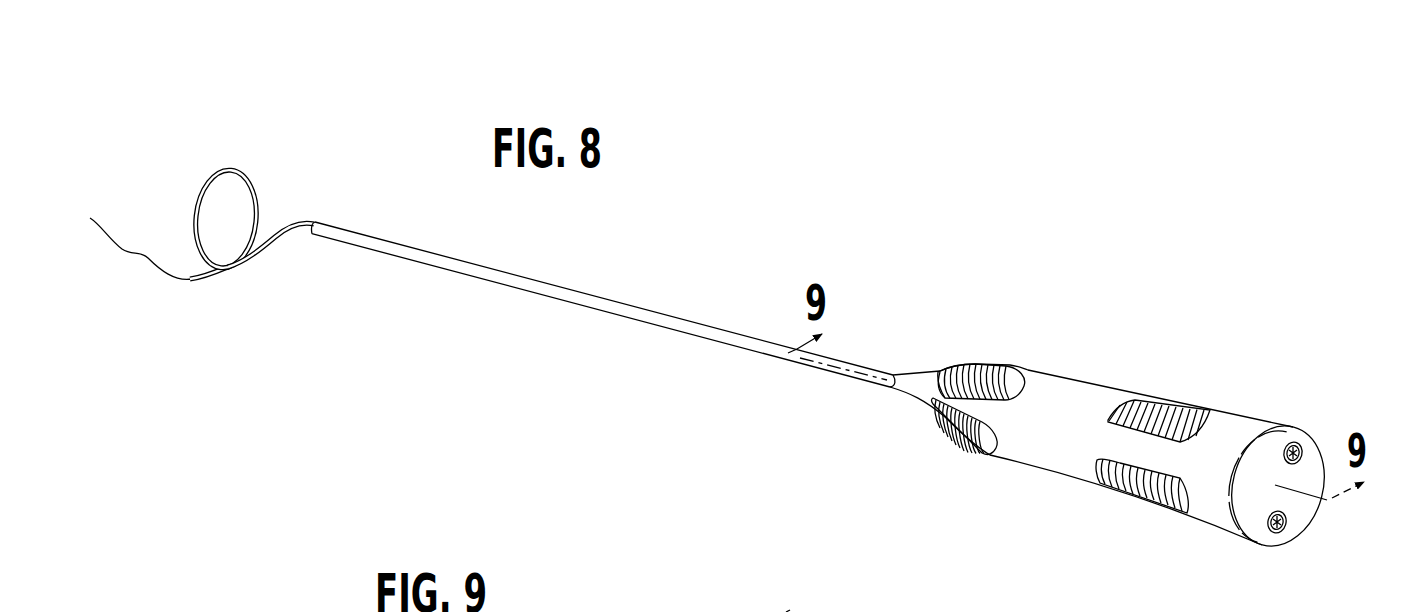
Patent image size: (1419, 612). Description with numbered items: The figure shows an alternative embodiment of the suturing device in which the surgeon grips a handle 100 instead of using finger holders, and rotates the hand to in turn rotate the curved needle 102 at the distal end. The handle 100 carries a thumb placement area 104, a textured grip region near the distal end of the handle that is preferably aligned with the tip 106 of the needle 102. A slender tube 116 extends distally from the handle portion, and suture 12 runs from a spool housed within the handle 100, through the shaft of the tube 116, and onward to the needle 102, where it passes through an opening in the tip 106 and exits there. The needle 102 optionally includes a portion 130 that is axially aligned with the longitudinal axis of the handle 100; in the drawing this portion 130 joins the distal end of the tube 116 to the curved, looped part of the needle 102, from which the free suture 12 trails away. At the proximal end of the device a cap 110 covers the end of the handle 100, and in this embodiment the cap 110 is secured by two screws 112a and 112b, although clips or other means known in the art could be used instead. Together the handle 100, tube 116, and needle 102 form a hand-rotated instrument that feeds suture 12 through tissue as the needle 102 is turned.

In FIG. 8, the suture 12 is at (130, 263).
In FIG. 8, the curved needle 102 is at (233, 160).
In FIG. 8, the tip 106 is at (193, 286).
In FIG. 8, the axially aligned needle portion 130 is at (298, 215).
In FIG. 8, the tube 116 is at (553, 282).
In FIG. 8, the thumb placement area 104 is at (953, 357).
In FIG. 8, the handle 100 is at (1096, 357).
In FIG. 9, the handle 100 is at (788, 611).
In FIG. 8, the cap 110 is at (1303, 467).
In FIG. 8, the screw 112a is at (1297, 443).
In FIG. 8, the screw 112b is at (1283, 526).